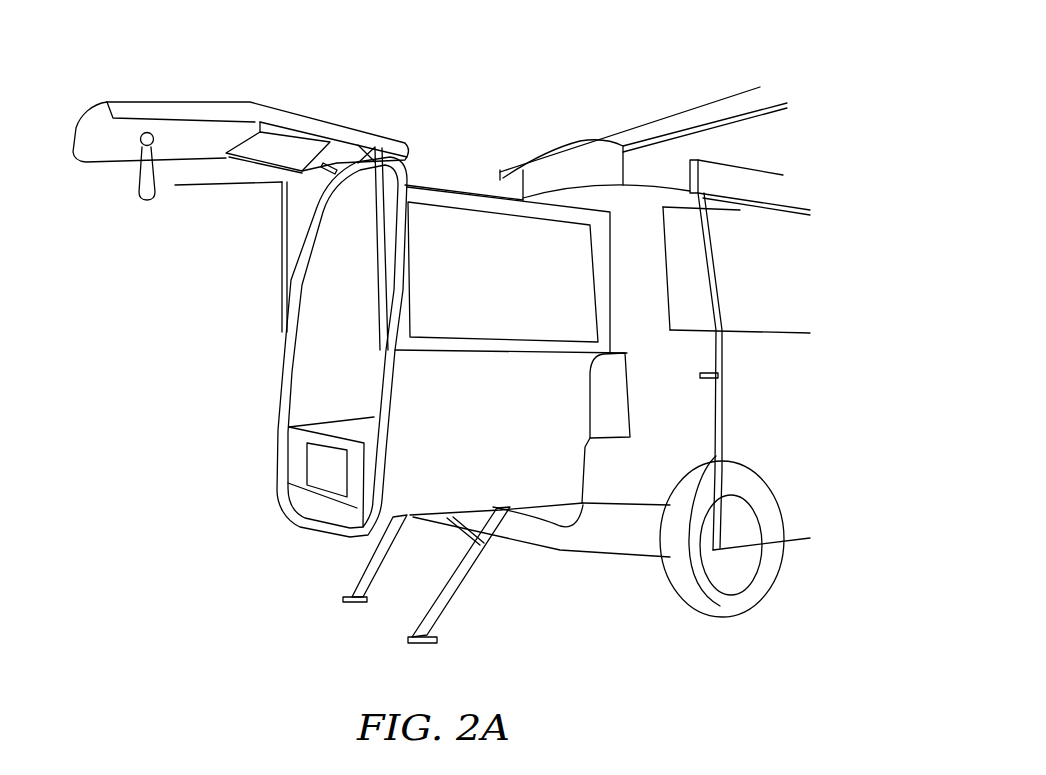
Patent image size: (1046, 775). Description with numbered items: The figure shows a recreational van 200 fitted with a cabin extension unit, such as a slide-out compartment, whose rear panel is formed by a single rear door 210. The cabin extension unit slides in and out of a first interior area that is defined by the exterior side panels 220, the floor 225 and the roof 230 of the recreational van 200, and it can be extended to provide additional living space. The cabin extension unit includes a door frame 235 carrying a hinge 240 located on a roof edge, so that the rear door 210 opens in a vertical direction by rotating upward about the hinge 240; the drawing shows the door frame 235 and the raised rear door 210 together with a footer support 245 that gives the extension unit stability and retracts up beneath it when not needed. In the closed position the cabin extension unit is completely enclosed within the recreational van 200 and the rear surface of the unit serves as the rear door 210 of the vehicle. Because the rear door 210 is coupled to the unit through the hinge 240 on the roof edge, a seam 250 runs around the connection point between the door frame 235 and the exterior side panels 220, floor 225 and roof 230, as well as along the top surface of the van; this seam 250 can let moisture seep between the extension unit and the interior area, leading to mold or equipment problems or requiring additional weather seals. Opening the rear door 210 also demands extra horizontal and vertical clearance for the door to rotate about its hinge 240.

The recreational van 200 is at (740, 65).
The rear door 210 is at (192, 150).
The exterior side panels 220 is at (660, 387).
The floor 225 is at (577, 545).
The roof 230 is at (780, 197).
The door frame 235 is at (282, 368).
The hinge 240 is at (405, 158).
The footer support 245 is at (463, 577).
The seam 250 is at (513, 200).